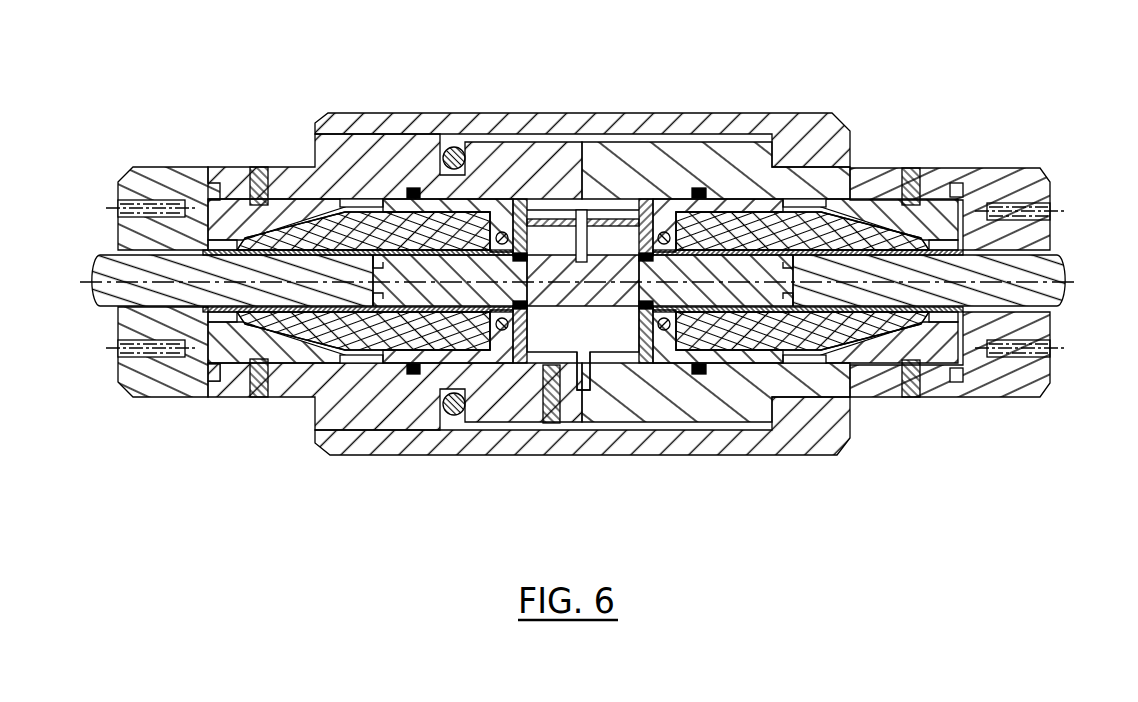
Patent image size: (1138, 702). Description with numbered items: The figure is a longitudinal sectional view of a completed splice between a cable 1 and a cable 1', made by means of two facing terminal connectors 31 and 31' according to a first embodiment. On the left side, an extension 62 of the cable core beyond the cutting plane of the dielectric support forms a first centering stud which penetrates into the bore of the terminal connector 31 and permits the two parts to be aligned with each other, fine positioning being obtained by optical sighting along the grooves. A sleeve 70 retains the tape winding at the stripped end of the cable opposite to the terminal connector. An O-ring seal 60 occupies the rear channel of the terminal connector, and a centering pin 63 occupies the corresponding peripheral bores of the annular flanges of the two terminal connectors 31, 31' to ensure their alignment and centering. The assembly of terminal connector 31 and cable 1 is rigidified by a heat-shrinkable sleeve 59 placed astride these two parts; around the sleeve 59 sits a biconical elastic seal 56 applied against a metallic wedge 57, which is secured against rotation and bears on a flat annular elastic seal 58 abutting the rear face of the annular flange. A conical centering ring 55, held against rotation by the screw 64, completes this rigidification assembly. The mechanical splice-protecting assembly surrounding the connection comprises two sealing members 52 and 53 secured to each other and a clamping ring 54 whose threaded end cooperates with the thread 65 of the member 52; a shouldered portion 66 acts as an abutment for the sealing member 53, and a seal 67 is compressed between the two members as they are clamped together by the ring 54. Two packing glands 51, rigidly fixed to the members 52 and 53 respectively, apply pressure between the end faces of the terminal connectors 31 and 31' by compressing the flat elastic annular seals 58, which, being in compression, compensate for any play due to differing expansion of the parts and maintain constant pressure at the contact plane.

The cable 1 is at (577, 280).
The cable 1' is at (875, 280).
The terminal connector 31 is at (583, 345).
The terminal connector 31' is at (601, 345).
The packing gland 51 is at (148, 205).
The sealing member 52 is at (178, 177).
The sealing member 53 is at (940, 182).
The clamping ring 54 is at (672, 124).
The conical centering ring 55 is at (245, 350).
The biconical elastic seal 56 is at (290, 340).
The metallic wedge 57 is at (490, 352).
The flat annular elastic seal 58 is at (652, 357).
The heat-shrinkable sleeve 59 is at (363, 313).
The O-ring seal 60 is at (550, 392).
The extension of the cable core 62 is at (380, 292).
The centering pin 63 is at (553, 216).
The screw 64 is at (260, 192).
The thread 65 is at (330, 113).
The shouldered portion 66 is at (583, 212).
The seal 67 is at (454, 147).
The sleeve 70 is at (195, 352).